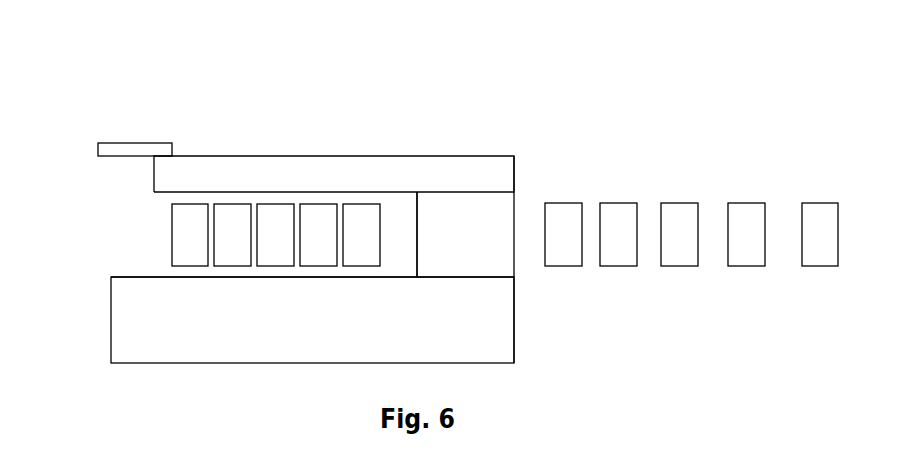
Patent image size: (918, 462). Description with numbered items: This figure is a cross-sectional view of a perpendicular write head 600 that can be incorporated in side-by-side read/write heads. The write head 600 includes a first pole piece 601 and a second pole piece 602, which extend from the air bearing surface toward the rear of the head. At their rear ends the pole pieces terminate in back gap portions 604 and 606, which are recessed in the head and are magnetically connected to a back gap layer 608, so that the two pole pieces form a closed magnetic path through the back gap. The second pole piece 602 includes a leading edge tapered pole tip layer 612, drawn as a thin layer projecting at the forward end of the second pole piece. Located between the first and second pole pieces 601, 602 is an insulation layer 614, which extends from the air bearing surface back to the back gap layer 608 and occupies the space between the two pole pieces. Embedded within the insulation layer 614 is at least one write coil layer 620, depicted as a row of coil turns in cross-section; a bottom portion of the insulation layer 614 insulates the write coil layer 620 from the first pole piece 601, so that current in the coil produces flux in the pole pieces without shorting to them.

The write head 600 is at (588, 77).
The first pole piece 601 is at (122, 327).
The second pole piece 602 is at (205, 170).
The back gap portion 604 is at (515, 156).
The back gap portion 606 is at (514, 332).
The back gap layer 608 is at (465, 234).
The leading edge tapered pole tip layer 612 is at (123, 142).
The insulation layer 614 is at (397, 218).
The write coil layer 620 is at (276, 212).